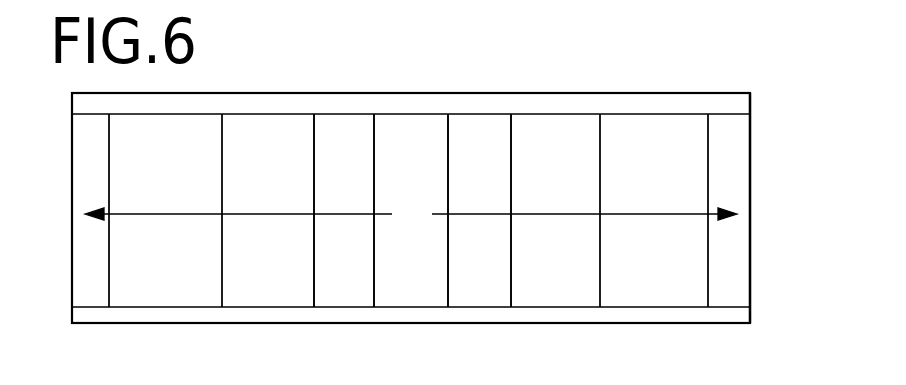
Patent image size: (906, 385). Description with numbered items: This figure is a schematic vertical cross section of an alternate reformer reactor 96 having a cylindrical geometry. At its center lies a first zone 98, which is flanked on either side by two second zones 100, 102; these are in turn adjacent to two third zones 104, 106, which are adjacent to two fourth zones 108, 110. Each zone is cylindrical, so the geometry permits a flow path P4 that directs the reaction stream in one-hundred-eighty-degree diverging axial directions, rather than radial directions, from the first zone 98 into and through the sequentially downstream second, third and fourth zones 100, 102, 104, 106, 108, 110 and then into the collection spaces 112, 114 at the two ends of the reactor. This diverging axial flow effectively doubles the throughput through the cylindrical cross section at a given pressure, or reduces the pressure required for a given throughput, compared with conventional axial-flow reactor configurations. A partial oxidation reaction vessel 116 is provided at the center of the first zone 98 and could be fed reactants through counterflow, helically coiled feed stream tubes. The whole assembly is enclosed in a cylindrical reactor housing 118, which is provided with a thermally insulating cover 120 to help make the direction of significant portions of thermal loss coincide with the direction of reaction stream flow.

The cylindrical reactor 96 is at (622, 103).
The first zone 98 is at (400, 292).
The second zone 100 is at (338, 273).
The second zone 102 is at (480, 280).
The third zone 104 is at (255, 277).
The third zone 106 is at (542, 280).
The fourth zone 108 is at (143, 285).
The fourth zone 110 is at (673, 268).
The collection space 112 is at (96, 283).
The collection space 114 is at (730, 268).
The partial oxidation reaction vessel 116 is at (411, 215).
The cylindrical reactor housing 118 is at (752, 103).
The thermally insulating cover 120 is at (680, 108).
The flow path P4 is at (346, 205).